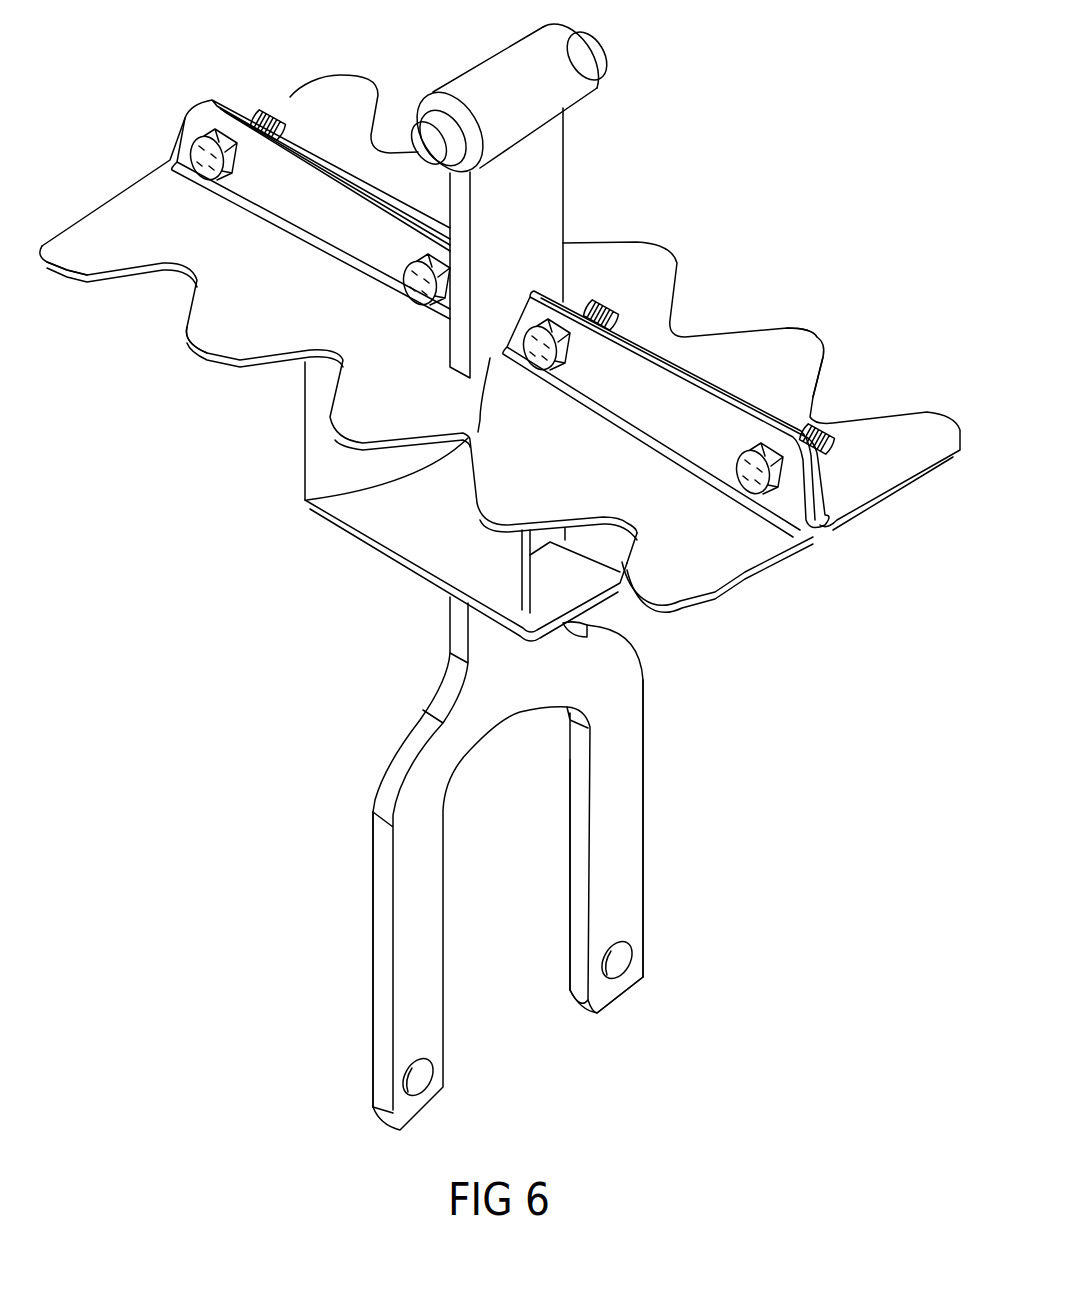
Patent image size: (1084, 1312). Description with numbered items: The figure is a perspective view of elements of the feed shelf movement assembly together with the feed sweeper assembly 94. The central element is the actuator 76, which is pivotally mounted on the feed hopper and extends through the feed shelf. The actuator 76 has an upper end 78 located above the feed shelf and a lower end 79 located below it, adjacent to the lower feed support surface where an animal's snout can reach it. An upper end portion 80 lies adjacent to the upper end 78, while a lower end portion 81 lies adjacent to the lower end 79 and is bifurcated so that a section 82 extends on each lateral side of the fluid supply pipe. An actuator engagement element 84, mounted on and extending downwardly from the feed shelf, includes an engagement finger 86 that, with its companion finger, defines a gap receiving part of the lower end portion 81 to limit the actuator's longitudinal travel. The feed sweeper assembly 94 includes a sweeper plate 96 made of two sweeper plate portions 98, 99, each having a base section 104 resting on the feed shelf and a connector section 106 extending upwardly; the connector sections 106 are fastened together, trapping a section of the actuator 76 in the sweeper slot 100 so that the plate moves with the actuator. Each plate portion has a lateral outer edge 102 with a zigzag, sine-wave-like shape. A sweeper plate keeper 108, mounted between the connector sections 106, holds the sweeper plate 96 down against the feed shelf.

The actuator 76 is at (542, 863).
The upper end 78 is at (513, 73).
The lower end 79 is at (612, 1010).
The upper end portion 80 is at (533, 195).
The lower end portion 81 is at (620, 815).
The section of the lower end portion 82 is at (612, 853).
The actuator engagement element 84 is at (549, 570).
The engagement finger 86 is at (573, 580).
The feed sweeper assembly 94 is at (427, 291).
The sweeper plate 96 is at (731, 427).
The sweeper plate portion 98 is at (220, 330).
The sweeper plate portion 99 is at (808, 340).
The sweeper slot 100 is at (400, 500).
The lateral outer edge 102 is at (103, 280).
The base section 104 is at (127, 220).
The connector section 106 is at (190, 130).
The sweeper plate keeper 108 is at (323, 175).